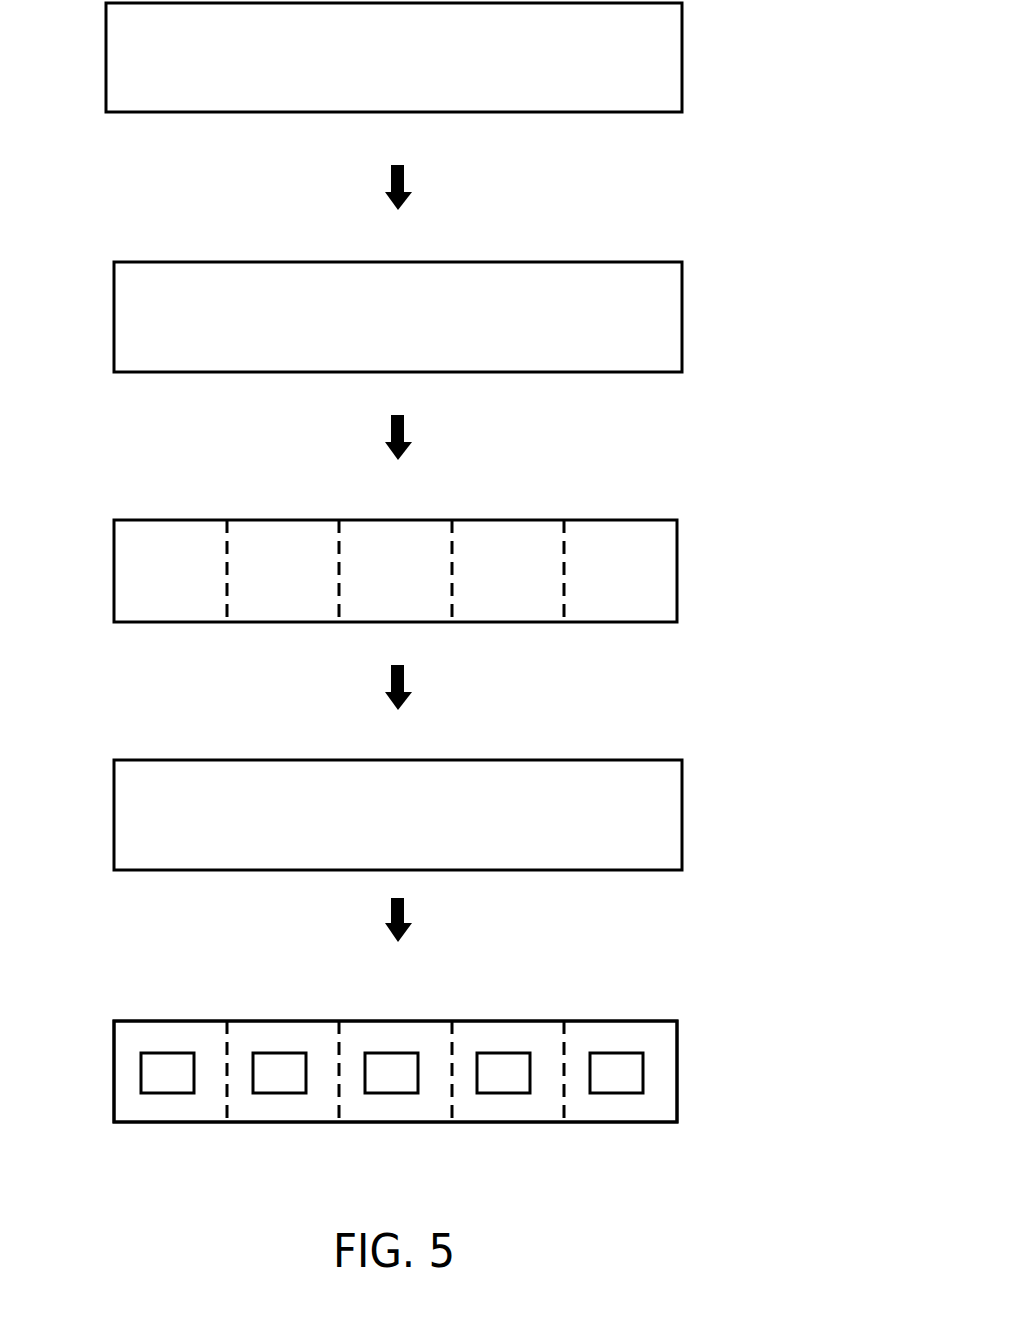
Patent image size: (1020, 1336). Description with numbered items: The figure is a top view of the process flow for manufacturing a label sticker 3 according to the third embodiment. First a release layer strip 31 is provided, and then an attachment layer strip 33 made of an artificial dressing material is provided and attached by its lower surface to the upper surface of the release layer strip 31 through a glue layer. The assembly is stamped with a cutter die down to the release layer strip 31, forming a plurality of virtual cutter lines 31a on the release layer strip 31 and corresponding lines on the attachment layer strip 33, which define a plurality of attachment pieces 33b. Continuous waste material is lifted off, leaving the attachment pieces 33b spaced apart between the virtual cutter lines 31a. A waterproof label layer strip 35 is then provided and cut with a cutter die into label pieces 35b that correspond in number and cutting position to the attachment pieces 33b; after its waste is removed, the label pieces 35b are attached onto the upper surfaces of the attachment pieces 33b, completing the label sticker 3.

The label sticker 3 is at (152, 966).
The release layer strip 31 is at (645, 52).
The virtual cutter lines 31a is at (563, 518).
The attachment layer strip 33 is at (645, 312).
The attachment pieces 33b is at (652, 570).
The label layer strip 35 is at (643, 818).
The label pieces 35b is at (620, 1068).